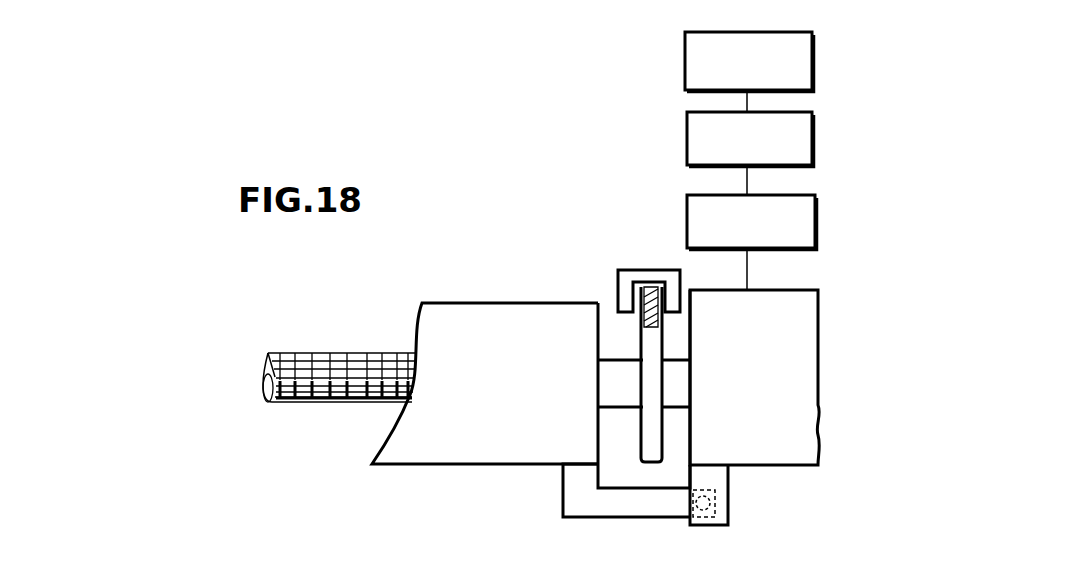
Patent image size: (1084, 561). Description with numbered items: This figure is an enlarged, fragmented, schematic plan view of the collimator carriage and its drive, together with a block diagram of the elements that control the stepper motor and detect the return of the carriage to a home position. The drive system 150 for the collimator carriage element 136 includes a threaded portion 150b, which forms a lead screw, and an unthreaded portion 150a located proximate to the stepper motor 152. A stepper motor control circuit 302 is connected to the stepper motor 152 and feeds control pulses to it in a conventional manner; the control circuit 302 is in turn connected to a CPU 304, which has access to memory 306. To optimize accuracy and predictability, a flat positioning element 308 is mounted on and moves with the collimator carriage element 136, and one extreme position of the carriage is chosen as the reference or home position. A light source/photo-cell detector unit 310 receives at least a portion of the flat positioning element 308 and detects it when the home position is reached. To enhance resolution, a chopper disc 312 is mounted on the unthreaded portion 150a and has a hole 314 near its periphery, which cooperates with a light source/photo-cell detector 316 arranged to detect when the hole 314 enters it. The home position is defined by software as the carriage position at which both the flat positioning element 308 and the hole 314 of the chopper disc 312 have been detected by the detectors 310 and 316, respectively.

The memory 306 is at (780, 32).
The CPU 304 is at (800, 112).
The stepper motor control circuit 302 is at (804, 195).
The stepper motor 152 is at (804, 295).
The collimator carriage element 136 is at (420, 474).
The drive system 150 is at (337, 401).
The unthreaded portion 150a is at (606, 378).
The threaded portion 150b is at (338, 352).
The flat positioning element 308 is at (568, 478).
The light source/photo-cell detector unit 310 is at (717, 500).
The chopper disc 312 is at (652, 455).
The hole 314 is at (645, 308).
The light source/photo-cell detector 316 is at (631, 268).